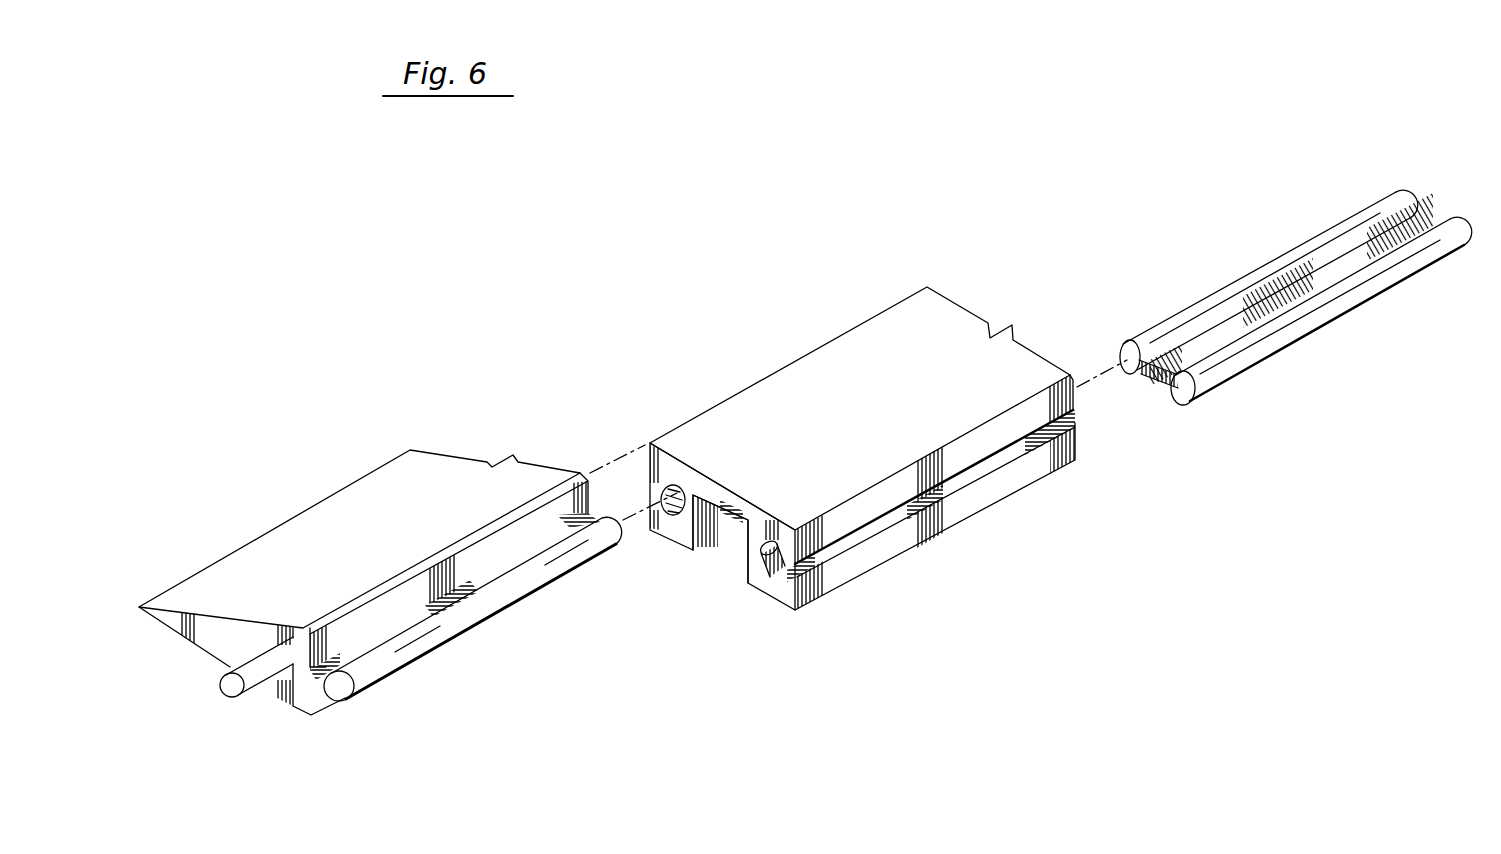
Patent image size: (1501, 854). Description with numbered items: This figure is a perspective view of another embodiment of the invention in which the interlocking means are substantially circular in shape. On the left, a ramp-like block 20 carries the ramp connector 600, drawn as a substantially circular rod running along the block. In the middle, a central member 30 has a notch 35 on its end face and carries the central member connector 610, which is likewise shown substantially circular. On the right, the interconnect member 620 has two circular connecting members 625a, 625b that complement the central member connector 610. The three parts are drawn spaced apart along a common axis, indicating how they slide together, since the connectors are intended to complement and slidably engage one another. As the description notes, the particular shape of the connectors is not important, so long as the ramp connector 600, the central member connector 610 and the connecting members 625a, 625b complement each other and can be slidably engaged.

The first optical bench block 20 is at (360, 515).
The second optical bench block 30 is at (834, 380).
The notch 35 is at (720, 555).
The ramp connector 600 is at (490, 610).
The central member connector 610 is at (772, 572).
The interconnect member 620 is at (1303, 255).
The circular connecting member 625a is at (1393, 190).
The circular connecting member 625b is at (1430, 267).